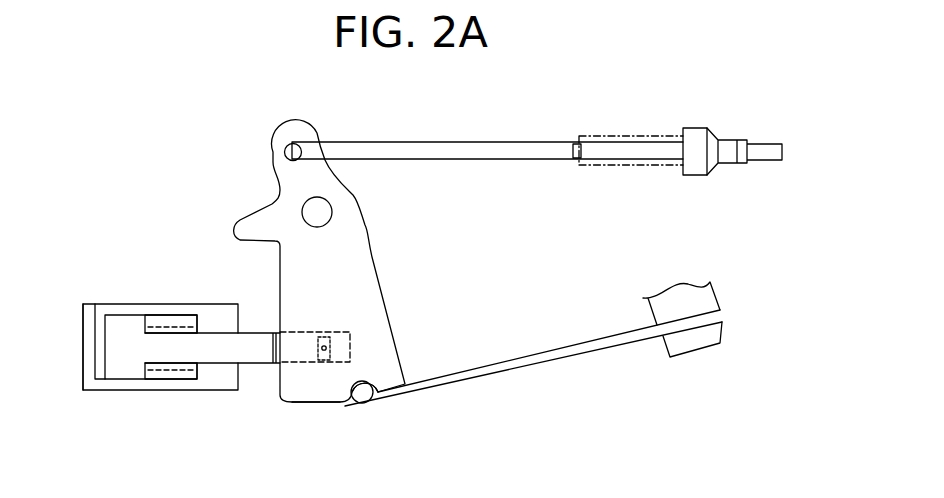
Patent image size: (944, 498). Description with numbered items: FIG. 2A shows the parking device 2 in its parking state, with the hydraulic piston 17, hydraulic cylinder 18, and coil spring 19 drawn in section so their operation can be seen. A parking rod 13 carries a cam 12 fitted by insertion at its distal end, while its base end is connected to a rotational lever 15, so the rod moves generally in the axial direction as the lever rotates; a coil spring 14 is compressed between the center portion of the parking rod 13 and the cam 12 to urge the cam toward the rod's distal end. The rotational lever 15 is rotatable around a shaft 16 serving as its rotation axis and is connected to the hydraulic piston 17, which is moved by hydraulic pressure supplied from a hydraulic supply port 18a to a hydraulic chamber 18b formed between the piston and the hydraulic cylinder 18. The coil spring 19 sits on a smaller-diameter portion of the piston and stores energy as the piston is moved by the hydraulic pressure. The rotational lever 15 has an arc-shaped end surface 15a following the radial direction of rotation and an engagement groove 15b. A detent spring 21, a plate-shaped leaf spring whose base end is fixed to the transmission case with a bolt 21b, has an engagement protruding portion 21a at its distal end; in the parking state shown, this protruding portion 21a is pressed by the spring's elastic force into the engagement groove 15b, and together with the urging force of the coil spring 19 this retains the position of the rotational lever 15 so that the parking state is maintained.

The parking device 2 is at (99, 123).
The cam 12 is at (712, 142).
The parking rod 13 is at (512, 140).
The coil spring 14 is at (643, 135).
The rotational lever 15 is at (350, 210).
The end surface 15a is at (310, 403).
The engagement groove 15b is at (368, 373).
The shaft 16 is at (318, 212).
The hydraulic piston 17 is at (257, 364).
The hydraulic cylinder 18 is at (131, 305).
The hydraulic supply port 18a is at (100, 305).
The hydraulic chamber 18b is at (103, 343).
The coil spring 19 is at (172, 391).
The detent spring 21 is at (531, 361).
The engagement protruding portion 21a is at (362, 403).
The bolt 21b is at (713, 342).